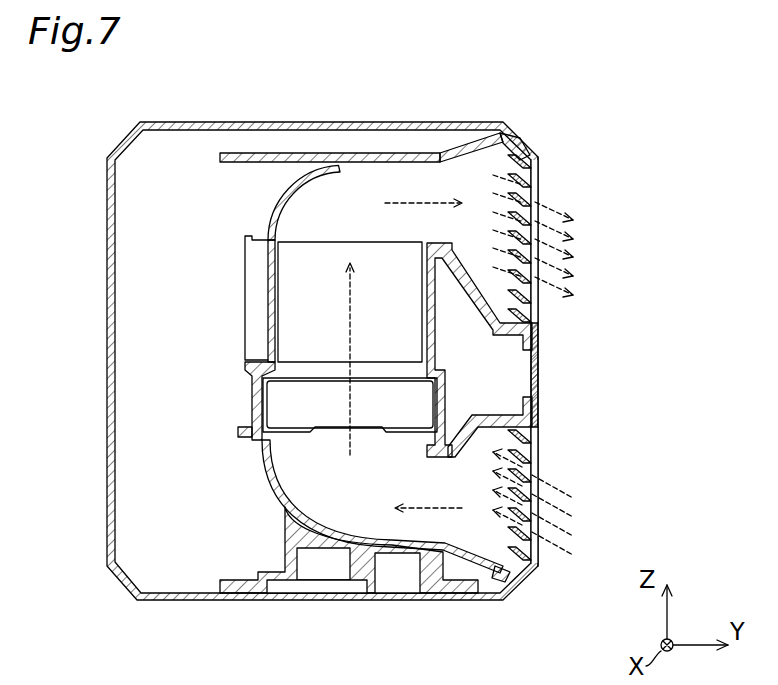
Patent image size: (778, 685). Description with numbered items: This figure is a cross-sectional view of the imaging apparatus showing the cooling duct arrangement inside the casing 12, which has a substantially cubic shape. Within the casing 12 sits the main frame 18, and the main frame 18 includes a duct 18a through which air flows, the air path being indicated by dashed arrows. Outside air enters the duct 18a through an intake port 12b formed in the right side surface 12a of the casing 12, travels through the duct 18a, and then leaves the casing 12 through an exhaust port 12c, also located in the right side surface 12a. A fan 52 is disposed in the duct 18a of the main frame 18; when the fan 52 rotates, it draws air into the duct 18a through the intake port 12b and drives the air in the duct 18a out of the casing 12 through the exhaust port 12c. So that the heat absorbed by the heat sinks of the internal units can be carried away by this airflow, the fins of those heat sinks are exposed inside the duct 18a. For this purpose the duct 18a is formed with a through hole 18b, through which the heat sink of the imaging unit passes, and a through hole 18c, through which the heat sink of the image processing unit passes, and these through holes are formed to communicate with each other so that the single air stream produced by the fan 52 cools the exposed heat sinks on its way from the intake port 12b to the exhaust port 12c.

The casing 12 is at (331, 122).
The right side surface 12a is at (540, 371).
The intake port 12b is at (538, 457).
The exhaust port 12c is at (536, 178).
The main frame 18 is at (262, 458).
The duct 18a is at (379, 499).
The through hole 18b is at (406, 314).
The through hole 18c is at (252, 297).
The fan 52 is at (268, 400).